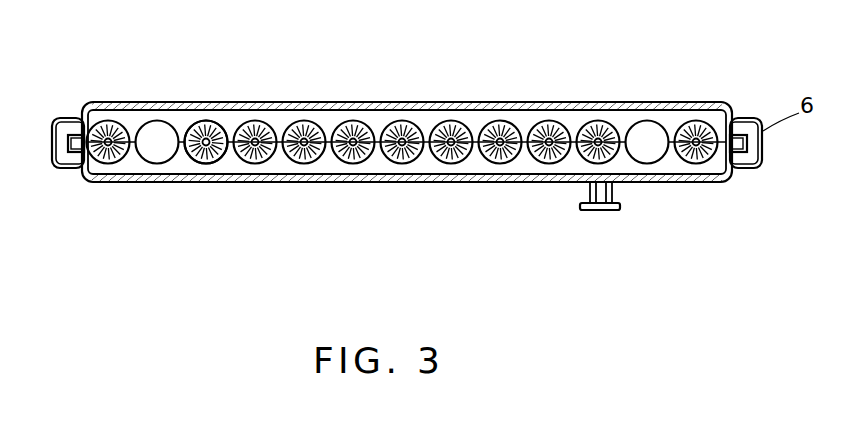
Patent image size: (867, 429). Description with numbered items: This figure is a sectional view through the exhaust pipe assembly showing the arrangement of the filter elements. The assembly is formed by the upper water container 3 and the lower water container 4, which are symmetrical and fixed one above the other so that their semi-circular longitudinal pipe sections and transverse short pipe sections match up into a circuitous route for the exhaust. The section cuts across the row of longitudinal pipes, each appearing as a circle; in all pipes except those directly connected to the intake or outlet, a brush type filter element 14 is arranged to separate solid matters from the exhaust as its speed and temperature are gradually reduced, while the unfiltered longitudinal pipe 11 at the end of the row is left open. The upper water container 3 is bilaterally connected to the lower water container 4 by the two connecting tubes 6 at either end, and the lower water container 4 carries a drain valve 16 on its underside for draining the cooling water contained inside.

The upper water container 3 is at (313, 104).
The lower water container 4 is at (208, 182).
The connecting tubes 6 is at (71, 117).
The plain roller 11 is at (647, 137).
The brush type filter elements 14 is at (217, 128).
The drain valve 16 is at (586, 207).